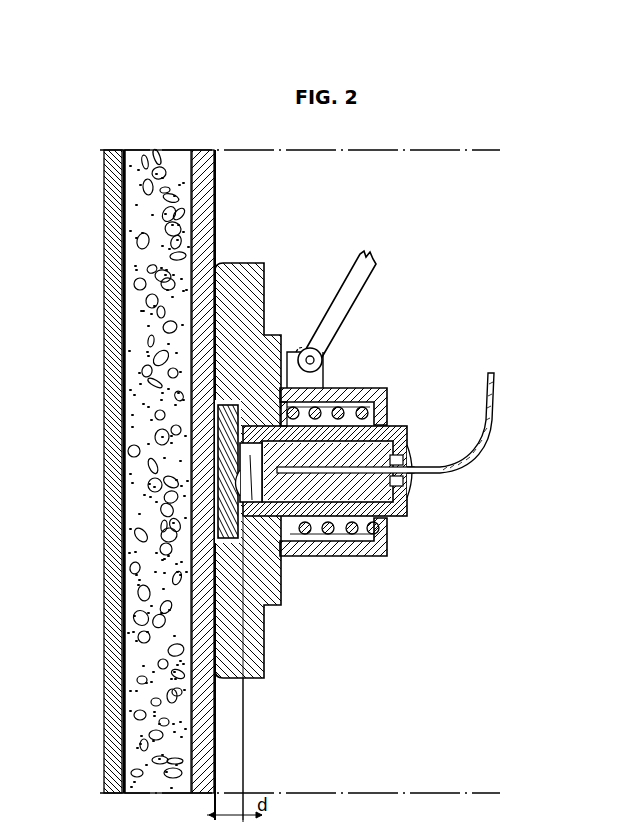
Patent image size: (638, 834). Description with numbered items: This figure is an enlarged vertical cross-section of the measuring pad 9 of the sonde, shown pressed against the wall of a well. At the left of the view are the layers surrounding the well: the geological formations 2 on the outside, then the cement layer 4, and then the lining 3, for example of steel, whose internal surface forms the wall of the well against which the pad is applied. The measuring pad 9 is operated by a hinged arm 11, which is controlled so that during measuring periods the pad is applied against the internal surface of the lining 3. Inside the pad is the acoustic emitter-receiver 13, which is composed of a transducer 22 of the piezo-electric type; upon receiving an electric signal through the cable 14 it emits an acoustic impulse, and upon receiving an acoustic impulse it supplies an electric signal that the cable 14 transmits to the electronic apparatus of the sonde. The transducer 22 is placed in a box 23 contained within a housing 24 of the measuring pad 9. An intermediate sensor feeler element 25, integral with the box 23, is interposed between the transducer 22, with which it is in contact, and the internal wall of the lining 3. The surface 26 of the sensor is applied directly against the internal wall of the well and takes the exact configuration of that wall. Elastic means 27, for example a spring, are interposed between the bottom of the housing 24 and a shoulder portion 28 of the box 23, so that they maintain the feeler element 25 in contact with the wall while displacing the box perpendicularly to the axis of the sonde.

The geological formations 2 is at (113, 150).
The lining 3 is at (201, 155).
The cement layer 4 is at (162, 160).
The measuring pad 9 is at (262, 677).
The hinged arm 11 is at (350, 283).
The acoustic emitter-receiver 13 is at (416, 521).
The cable 14 is at (437, 473).
The transducer 22 is at (291, 557).
The box 23 is at (393, 518).
The housing 24 is at (280, 400).
The intermediate sensor feeler element 25 is at (217, 413).
The surface of the sensor 26 is at (213, 484).
The elastic means 27 is at (356, 516).
The shoulder portion 28 is at (300, 535).